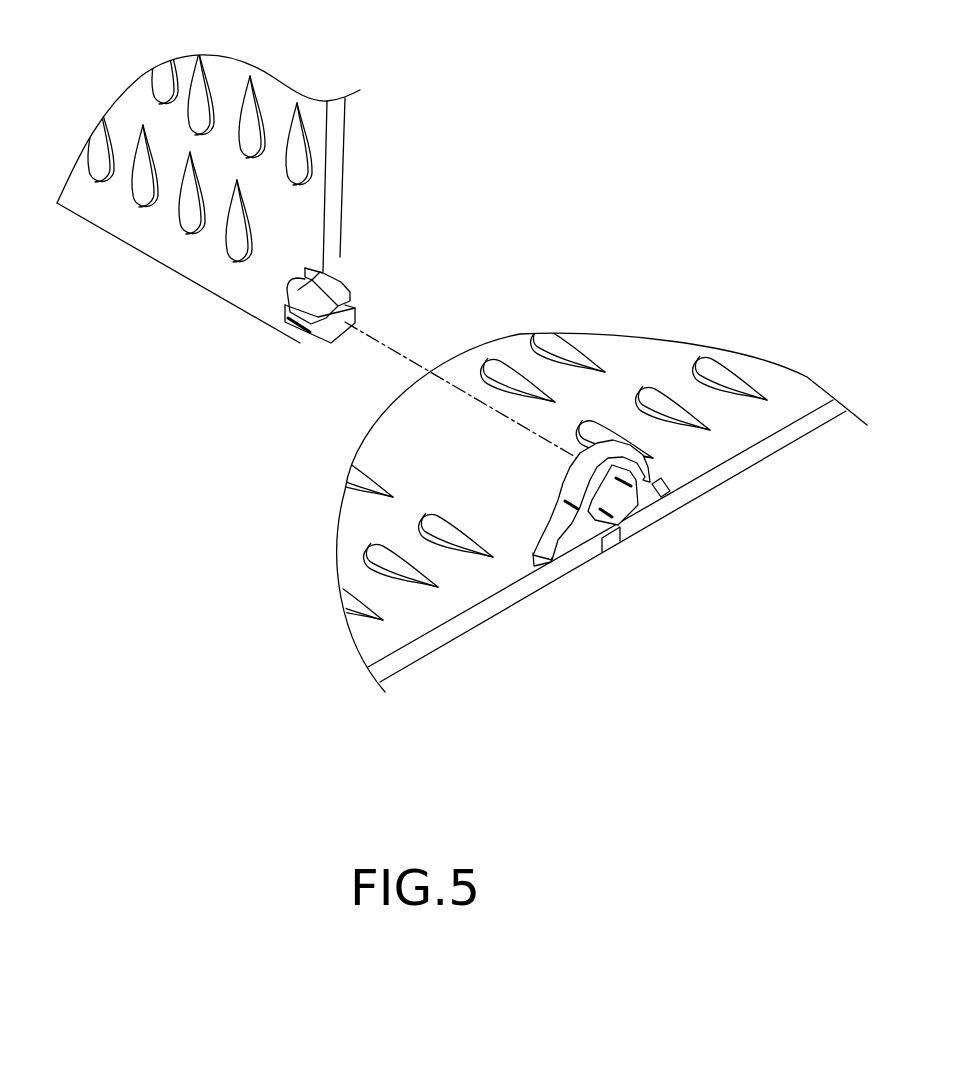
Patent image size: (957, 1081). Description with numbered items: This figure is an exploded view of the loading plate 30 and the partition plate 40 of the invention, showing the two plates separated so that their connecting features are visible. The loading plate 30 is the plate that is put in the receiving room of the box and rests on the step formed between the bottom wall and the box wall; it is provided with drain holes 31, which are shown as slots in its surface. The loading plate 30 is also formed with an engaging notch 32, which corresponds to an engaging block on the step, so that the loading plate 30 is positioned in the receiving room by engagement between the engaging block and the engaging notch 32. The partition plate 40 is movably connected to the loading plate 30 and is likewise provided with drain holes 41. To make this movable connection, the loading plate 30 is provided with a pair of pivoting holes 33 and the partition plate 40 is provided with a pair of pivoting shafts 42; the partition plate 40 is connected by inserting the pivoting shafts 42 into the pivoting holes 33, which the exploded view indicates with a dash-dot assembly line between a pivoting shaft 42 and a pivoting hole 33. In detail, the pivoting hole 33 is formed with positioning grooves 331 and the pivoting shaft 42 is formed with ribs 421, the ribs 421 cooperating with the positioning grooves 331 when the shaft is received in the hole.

The loading plate 30 is at (772, 445).
The drain holes 31 is at (733, 380).
The engaging notch 32 is at (608, 545).
The pivoting holes 33 is at (617, 500).
The positioning grooves 331 is at (645, 478).
The partition plate 40 is at (333, 167).
The drain holes 41 is at (242, 243).
The pivoting shafts 42 is at (344, 296).
The ribs 421 is at (332, 282).